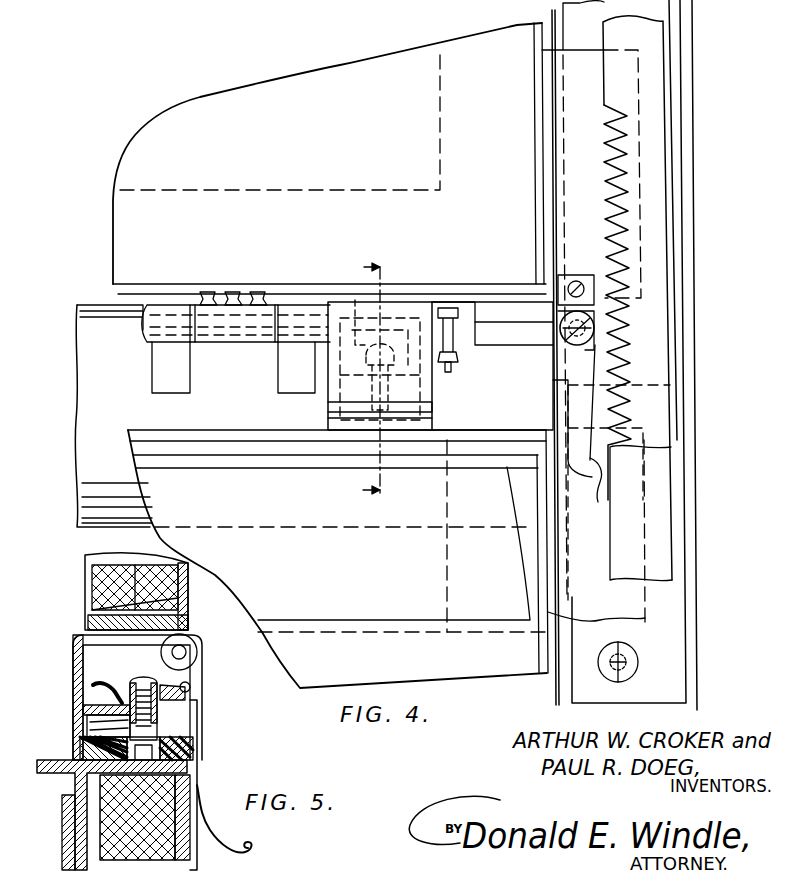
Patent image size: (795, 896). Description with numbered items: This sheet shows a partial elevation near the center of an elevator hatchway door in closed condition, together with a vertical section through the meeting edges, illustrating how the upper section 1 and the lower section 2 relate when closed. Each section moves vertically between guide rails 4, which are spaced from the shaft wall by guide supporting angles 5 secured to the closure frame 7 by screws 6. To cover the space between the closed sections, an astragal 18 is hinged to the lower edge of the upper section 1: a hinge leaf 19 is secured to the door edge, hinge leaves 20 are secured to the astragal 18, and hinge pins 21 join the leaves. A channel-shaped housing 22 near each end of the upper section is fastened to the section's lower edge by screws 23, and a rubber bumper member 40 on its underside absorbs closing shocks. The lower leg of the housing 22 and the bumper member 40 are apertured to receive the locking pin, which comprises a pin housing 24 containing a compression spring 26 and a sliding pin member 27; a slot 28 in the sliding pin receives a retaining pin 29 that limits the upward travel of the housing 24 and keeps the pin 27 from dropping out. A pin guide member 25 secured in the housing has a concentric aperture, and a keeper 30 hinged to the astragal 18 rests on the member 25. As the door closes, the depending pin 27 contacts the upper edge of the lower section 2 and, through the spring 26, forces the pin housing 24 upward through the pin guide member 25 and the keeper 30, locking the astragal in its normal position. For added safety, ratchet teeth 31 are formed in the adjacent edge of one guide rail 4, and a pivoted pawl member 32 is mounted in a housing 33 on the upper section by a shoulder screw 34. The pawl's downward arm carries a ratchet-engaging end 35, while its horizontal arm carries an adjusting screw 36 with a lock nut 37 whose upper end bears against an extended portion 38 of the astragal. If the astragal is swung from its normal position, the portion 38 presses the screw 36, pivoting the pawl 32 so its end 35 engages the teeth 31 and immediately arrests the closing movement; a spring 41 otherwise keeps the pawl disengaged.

In FIG. 4, the upper section 1 is at (244, 117).
In FIG. 5, the upper section 1 is at (105, 583).
In FIG. 4, the lower section 2 is at (330, 668).
In FIG. 5, the lower section 2 is at (105, 832).
In FIG. 4, the guide rails 4 is at (660, 33).
In FIG. 4, the guide supporting angles 5 is at (708, 624).
In FIG. 4, the screws 6 is at (640, 665).
In FIG. 4, the closure frame 7 is at (566, 638).
In FIG. 4, the astragal 18 is at (95, 473).
In FIG. 5, the astragal 18 is at (205, 820).
In FIG. 4, the hinge leaf 19 is at (222, 343).
In FIG. 4, the hinge leaves 20 is at (153, 380).
In FIG. 4, the hinge pins 21 is at (145, 330).
In FIG. 4, the channel-shaped housing 22 is at (336, 300).
In FIG. 5, the channel-shaped housing 22 is at (73, 660).
In FIG. 5, the screws 23 is at (85, 627).
In FIG. 4, the pin housing 24 is at (390, 350).
In FIG. 5, the pin housing 24 is at (143, 682).
In FIG. 5, the pin guide member 25 is at (85, 710).
In FIG. 5, the compression spring 26 is at (95, 727).
In FIG. 5, the sliding pin member 27 is at (190, 715).
In FIG. 5, the slot 28 is at (82, 745).
In FIG. 4, the retaining pin 29 is at (328, 413).
In FIG. 5, the retaining pin 29 is at (195, 745).
In FIG. 4, the keeper 30 is at (355, 298).
In FIG. 5, the keeper 30 is at (103, 685).
In FIG. 4, the ratchet teeth 31 is at (606, 178).
In FIG. 4, the pivoted pawl member 32 is at (467, 338).
In FIG. 4, the housing 33 is at (493, 325).
In FIG. 4, the shoulder screw 34 is at (597, 327).
In FIG. 4, the ratchet-engaging end 35 is at (588, 494).
In FIG. 4, the adjusting screw 36 is at (447, 373).
In FIG. 4, the lock nut 37 is at (455, 355).
In FIG. 4, the extended portion of astragal 38 is at (440, 302).
In FIG. 4, the rubber bumper member 40 is at (338, 442).
In FIG. 5, the rubber bumper member 40 is at (190, 762).
In FIG. 4, the spring 41 is at (560, 292).